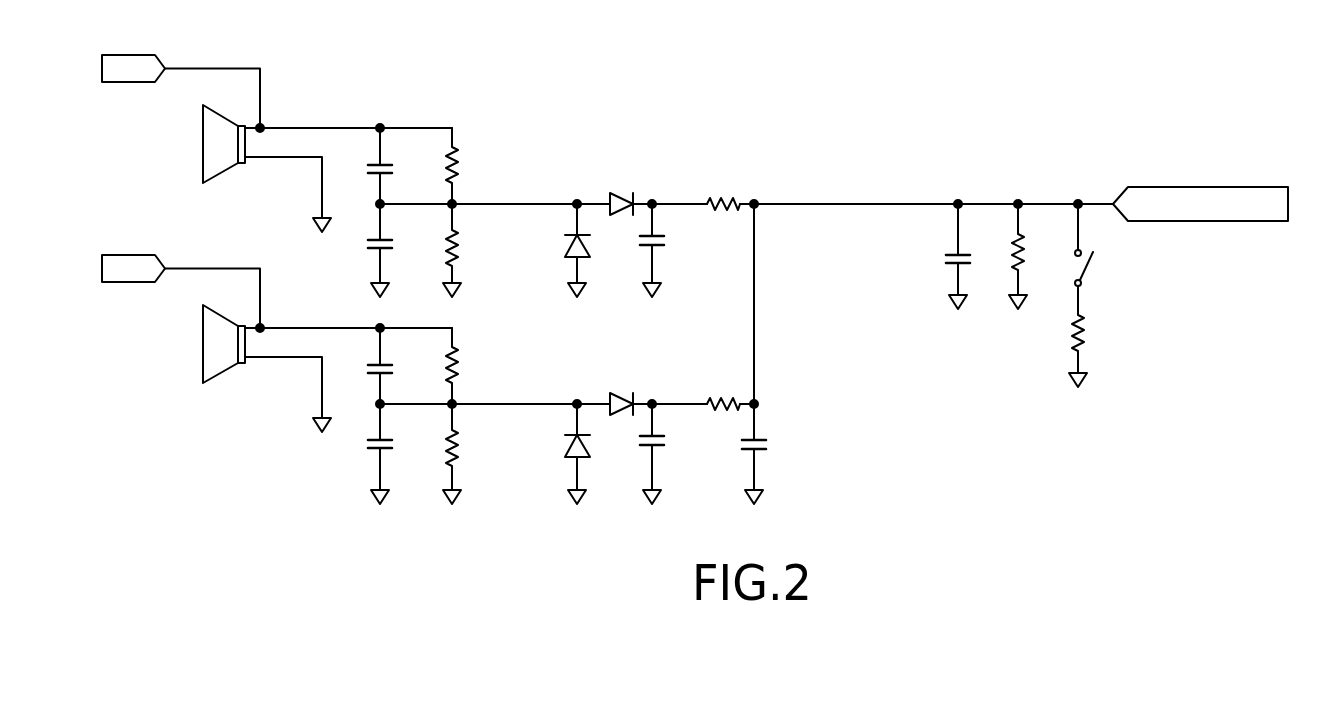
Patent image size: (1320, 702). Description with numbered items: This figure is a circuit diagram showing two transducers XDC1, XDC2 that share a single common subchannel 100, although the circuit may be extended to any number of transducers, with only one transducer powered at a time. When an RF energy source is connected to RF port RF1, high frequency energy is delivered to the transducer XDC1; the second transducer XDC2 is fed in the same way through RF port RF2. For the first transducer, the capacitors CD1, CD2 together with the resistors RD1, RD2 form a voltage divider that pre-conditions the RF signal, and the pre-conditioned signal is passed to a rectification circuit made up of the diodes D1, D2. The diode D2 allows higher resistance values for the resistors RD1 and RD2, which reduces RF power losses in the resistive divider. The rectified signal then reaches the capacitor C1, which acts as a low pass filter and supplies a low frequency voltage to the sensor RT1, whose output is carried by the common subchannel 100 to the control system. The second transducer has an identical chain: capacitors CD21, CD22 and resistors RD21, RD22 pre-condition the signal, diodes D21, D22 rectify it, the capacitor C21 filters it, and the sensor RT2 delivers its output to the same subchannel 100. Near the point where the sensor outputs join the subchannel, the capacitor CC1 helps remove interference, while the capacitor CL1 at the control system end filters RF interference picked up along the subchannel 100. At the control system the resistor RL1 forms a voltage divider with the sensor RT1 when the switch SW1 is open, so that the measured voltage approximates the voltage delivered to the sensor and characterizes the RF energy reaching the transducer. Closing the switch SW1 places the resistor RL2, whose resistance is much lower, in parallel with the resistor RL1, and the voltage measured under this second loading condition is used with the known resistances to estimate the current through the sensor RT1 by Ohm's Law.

The common subchannel 100 is at (873, 188).
The RF port RF1 is at (181, 90).
The RF port RF2 is at (181, 290).
The transducer XDC1 is at (327, 168).
The transducer XDC2 is at (327, 368).
The capacitor CD1 is at (403, 168).
The capacitor CD2 is at (403, 250).
The resistor RD1 is at (474, 168).
The resistor RD2 is at (473, 250).
The capacitor CD21 is at (405, 368).
The capacitor CD22 is at (405, 454).
The resistor RD21 is at (483, 368).
The resistor RD22 is at (479, 454).
The diode D1 is at (621, 189).
The diode D2 is at (566, 248).
The diode D21 is at (628, 389).
The diode D22 is at (560, 452).
The capacitor C1 is at (664, 248).
The capacitor C21 is at (670, 452).
The sensor RT1 is at (723, 190).
The sensor RT2 is at (725, 391).
The capacitor CC1 is at (776, 354).
The capacitor CL1 is at (973, 254).
The resistor RL1 is at (1037, 254).
The switch SW1 is at (1108, 243).
The resistor RL2 is at (1096, 336).